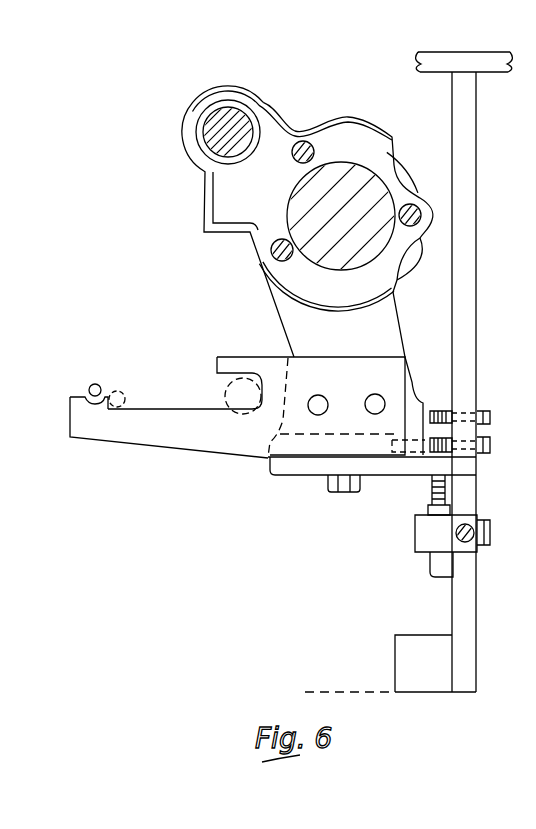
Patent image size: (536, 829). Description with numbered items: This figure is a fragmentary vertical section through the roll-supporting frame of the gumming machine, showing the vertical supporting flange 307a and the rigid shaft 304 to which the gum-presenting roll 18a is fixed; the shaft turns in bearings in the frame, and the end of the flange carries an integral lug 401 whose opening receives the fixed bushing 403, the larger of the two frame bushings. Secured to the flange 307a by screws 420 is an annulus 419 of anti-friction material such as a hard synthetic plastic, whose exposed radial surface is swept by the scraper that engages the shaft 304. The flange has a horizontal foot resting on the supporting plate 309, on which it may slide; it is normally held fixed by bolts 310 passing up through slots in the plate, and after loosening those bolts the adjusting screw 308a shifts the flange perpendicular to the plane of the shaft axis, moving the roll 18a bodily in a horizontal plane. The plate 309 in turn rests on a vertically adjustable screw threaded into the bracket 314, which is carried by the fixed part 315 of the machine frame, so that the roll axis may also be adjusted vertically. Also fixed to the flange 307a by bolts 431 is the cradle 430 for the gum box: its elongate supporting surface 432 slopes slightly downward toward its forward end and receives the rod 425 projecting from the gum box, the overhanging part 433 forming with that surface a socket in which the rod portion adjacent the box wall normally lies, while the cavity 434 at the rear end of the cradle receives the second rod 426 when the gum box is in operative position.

The lug 401 is at (253, 100).
The bushing 403 is at (203, 128).
The shaft 304 is at (350, 162).
The annulus 419 is at (392, 172).
The screws 420 is at (281, 256).
The presenting roll 18a is at (411, 266).
The vertical supporting flange 307a is at (391, 328).
The overhanging part 433 is at (236, 362).
The rod 425 is at (217, 391).
The supporting surface 432 is at (165, 409).
The rod 426 is at (86, 384).
The cavity 434 is at (108, 381).
The bolts 431 is at (327, 386).
The cradle 430 is at (366, 401).
The supporting plate 309 is at (398, 467).
The bolts 310 is at (328, 493).
The adjusting screw 308a is at (480, 451).
The bracket 314 is at (425, 535).
The fixed part of the machine frame 315 is at (460, 604).